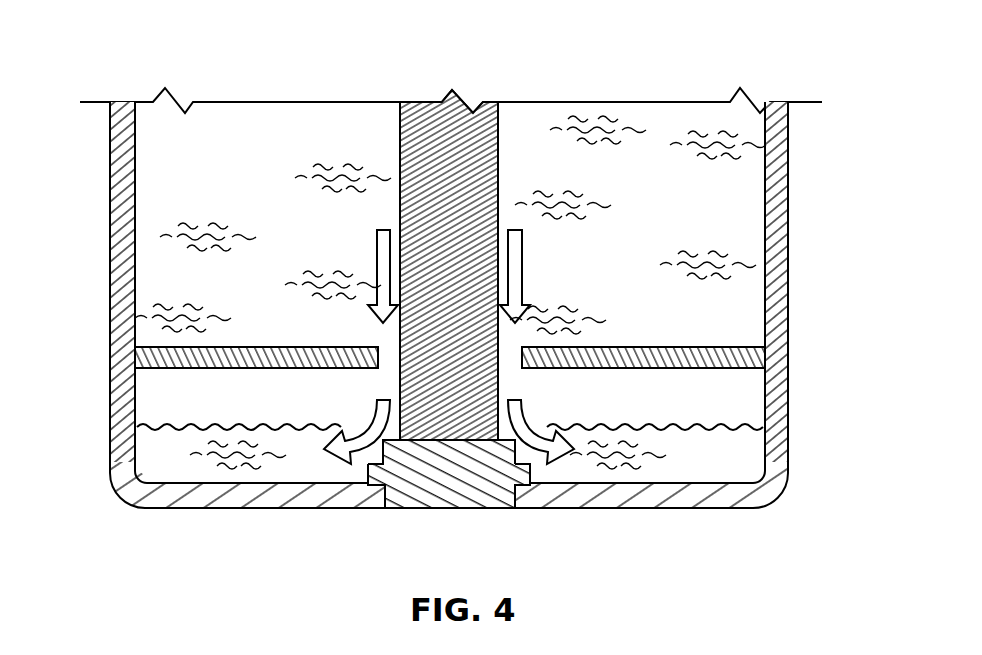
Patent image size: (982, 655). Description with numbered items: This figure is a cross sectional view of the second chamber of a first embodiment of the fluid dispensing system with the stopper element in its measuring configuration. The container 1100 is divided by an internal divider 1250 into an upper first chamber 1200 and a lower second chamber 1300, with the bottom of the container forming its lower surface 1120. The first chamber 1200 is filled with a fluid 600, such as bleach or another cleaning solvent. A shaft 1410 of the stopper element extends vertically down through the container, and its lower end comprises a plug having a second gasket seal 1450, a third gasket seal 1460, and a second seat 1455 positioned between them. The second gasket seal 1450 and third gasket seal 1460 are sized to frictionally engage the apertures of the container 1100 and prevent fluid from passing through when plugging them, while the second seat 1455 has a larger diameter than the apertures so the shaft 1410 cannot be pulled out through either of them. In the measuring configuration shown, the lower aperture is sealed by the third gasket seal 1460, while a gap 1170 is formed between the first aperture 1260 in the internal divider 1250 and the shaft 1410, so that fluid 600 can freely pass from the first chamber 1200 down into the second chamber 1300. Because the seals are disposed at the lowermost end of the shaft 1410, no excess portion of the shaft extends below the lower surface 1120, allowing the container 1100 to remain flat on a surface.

The fluid 600 is at (623, 118).
The container 1100 is at (447, 342).
The lower surface 1120 is at (740, 508).
The gap 1170 is at (393, 361).
The first chamber 1200 is at (752, 235).
The internal divider 1250 is at (750, 357).
The first aperture 1260 is at (393, 377).
The second chamber 1300 is at (743, 400).
The shaft 1410 is at (414, 134).
The second gasket seal 1450 is at (383, 447).
The second seat 1455 is at (530, 470).
The third gasket seal 1460 is at (392, 507).